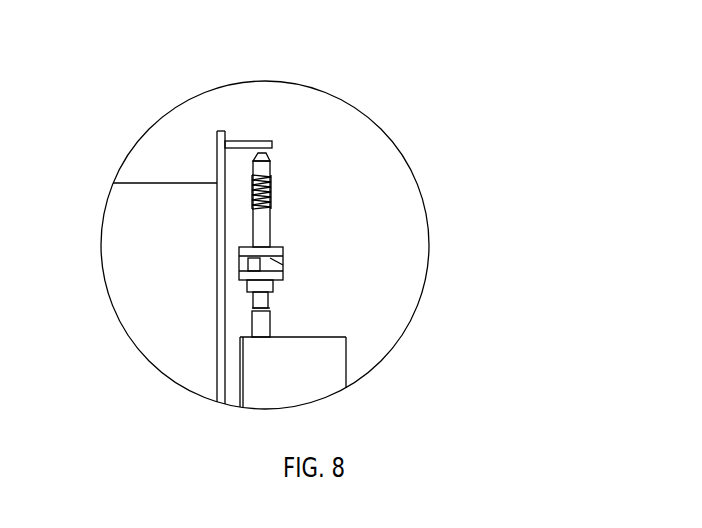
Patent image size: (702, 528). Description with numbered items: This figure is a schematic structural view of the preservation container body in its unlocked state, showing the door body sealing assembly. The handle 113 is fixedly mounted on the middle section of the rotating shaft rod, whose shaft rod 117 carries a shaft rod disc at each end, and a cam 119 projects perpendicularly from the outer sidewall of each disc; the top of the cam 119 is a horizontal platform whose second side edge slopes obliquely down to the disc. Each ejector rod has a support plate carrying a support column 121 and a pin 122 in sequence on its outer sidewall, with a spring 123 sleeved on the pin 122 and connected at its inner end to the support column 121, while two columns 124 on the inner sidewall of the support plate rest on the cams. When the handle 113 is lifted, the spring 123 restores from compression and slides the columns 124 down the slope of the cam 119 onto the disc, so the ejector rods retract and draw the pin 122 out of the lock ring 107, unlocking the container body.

The lock ring 107 is at (253, 143).
The handle 113 is at (315, 367).
The shaft rod 117 is at (265, 322).
The cam 119 is at (266, 271).
The support column 121 is at (273, 227).
The pin 122 is at (260, 168).
The spring 123 is at (273, 192).
The column 124 is at (248, 263).